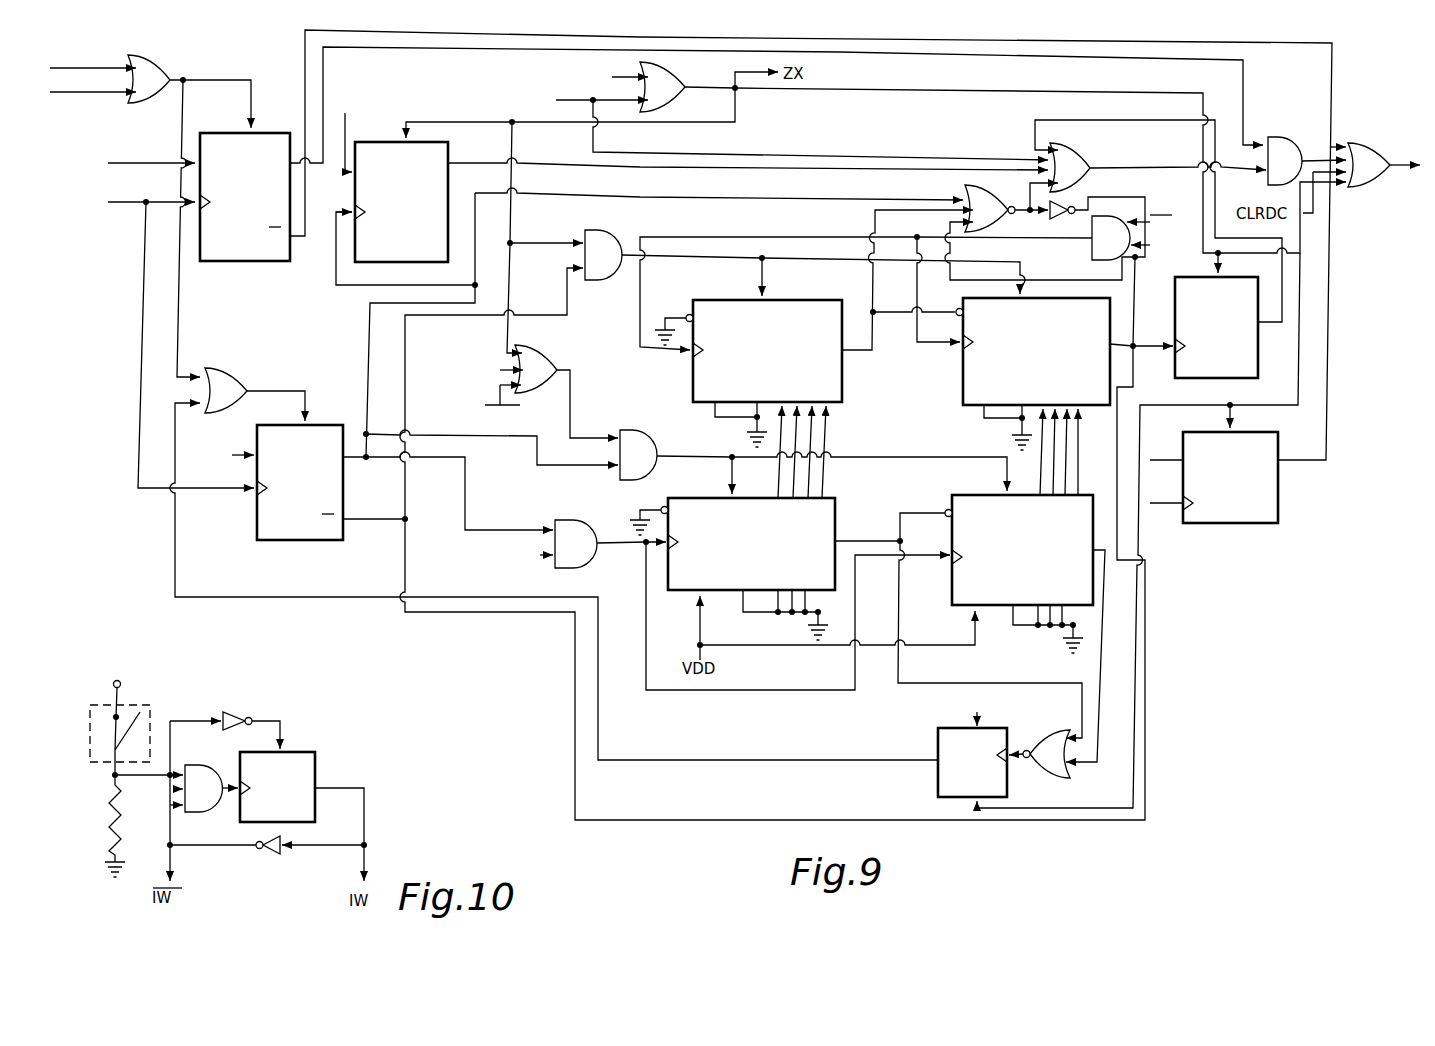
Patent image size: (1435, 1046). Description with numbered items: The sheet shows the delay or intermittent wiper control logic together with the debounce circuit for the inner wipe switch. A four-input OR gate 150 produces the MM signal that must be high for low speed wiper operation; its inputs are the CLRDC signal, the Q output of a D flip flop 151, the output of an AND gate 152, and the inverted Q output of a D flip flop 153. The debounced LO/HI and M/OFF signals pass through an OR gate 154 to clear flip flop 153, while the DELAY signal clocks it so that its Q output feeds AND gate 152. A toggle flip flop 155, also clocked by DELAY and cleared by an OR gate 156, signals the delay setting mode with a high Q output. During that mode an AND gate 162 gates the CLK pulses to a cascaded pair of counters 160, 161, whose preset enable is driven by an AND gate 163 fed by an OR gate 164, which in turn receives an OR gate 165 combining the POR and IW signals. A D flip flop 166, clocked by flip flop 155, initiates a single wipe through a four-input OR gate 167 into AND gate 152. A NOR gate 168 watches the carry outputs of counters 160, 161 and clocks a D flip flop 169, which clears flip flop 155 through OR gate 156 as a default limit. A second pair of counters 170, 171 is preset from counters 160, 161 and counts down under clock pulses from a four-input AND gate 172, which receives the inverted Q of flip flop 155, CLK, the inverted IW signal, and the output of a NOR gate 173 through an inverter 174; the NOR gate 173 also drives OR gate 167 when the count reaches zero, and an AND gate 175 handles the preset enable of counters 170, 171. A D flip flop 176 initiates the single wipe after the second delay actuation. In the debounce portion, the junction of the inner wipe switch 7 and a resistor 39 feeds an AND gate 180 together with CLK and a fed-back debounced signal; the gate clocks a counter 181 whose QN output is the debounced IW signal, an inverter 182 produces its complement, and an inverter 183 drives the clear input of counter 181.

In FIG. 9, the OR gate 150 is at (1385, 110).
In FIG. 9, the D flip flop 151 is at (1237, 507).
In FIG. 9, the AND gate 152 is at (1300, 110).
In FIG. 9, the D flip flop 153 is at (243, 262).
In FIG. 9, the OR gate 154 is at (148, 78).
In FIG. 9, the toggle flip flop 155 is at (278, 530).
In FIG. 9, the OR gate 156 is at (223, 383).
In FIG. 9, the counter 160 is at (672, 560).
In FIG. 9, the counter 161 is at (957, 570).
In FIG. 9, the AND gate 162 is at (583, 537).
In FIG. 9, the AND gate 163 is at (645, 453).
In FIG. 9, the OR gate 164 is at (537, 368).
In FIG. 9, the OR gate 165 is at (668, 92).
In FIG. 9, the D flip flop 166 is at (432, 152).
In FIG. 9, the OR gate 167 is at (1073, 170).
In FIG. 9, the NOR gate 168 is at (1045, 758).
In FIG. 9, the D flip flop 169 is at (948, 778).
In FIG. 9, the counter 170 is at (840, 283).
In FIG. 9, the counter 171 is at (970, 362).
In FIG. 9, the AND gate 172 is at (1107, 244).
In FIG. 9, the NOR gate 173 is at (962, 190).
In FIG. 9, the inverter 174 is at (1052, 216).
In FIG. 9, the AND gate 175 is at (617, 252).
In FIG. 9, the D flip flop 176 is at (1233, 362).
In FIG. 10, the inner wipe switch 7 is at (113, 732).
In FIG. 10, the resistor 39 is at (108, 813).
In FIG. 10, the AND gate 180 is at (205, 787).
In FIG. 10, the counter 181 is at (303, 762).
In FIG. 10, the inverter 182 is at (263, 857).
In FIG. 10, the inverter 183 is at (223, 689).